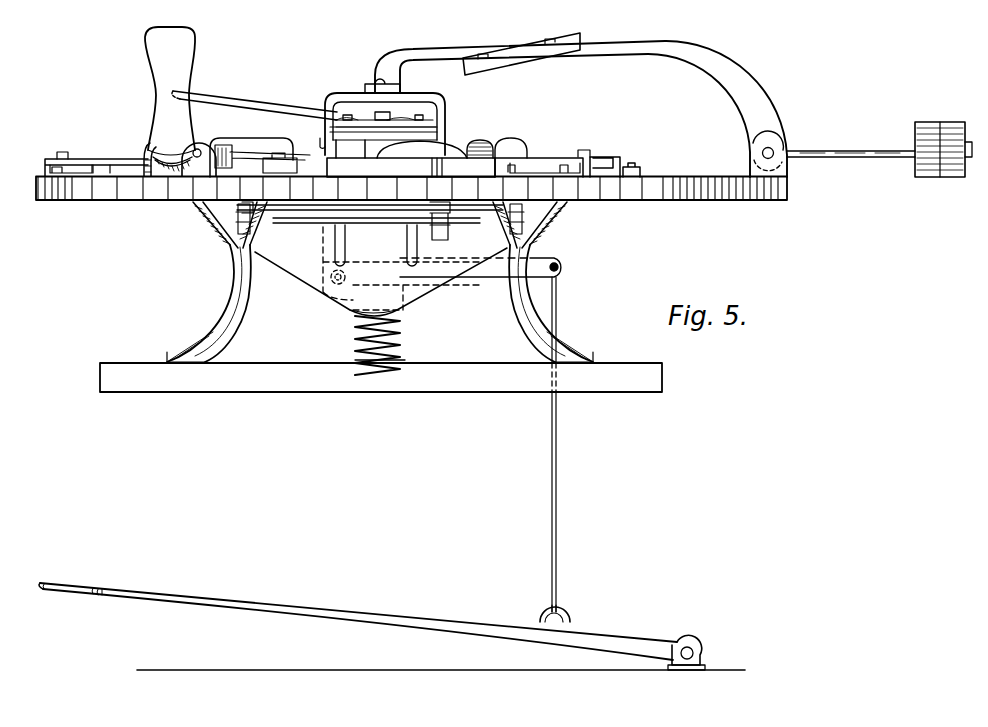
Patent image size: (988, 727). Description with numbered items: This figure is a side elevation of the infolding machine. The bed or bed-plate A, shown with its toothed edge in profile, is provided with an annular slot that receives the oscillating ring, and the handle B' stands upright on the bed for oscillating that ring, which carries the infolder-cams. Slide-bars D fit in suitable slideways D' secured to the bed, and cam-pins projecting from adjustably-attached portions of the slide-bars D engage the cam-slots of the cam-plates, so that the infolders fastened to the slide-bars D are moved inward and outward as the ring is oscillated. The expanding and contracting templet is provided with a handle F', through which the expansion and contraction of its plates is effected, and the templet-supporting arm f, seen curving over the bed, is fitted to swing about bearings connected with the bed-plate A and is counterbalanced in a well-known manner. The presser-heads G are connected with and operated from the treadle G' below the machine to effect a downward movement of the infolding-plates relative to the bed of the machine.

The bed-plate A is at (645, 200).
The handle B' is at (180, 101).
The templet handle F' is at (254, 95).
The templet-supporting arm f is at (673, 94).
The presser-heads G is at (368, 145).
The slide-bars D is at (342, 148).
The slideways D' is at (341, 146).
The treadle G' is at (392, 620).